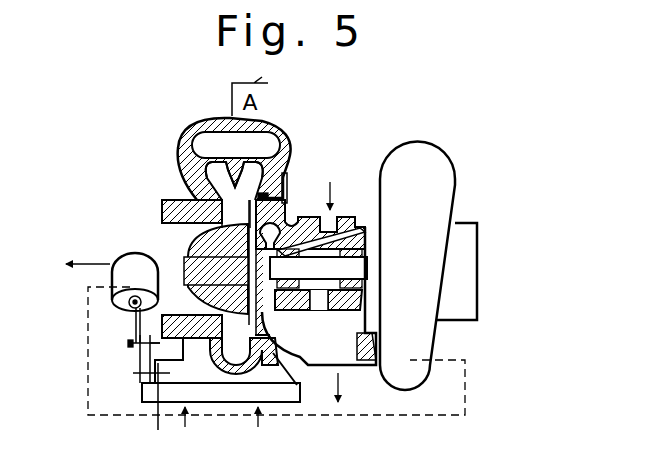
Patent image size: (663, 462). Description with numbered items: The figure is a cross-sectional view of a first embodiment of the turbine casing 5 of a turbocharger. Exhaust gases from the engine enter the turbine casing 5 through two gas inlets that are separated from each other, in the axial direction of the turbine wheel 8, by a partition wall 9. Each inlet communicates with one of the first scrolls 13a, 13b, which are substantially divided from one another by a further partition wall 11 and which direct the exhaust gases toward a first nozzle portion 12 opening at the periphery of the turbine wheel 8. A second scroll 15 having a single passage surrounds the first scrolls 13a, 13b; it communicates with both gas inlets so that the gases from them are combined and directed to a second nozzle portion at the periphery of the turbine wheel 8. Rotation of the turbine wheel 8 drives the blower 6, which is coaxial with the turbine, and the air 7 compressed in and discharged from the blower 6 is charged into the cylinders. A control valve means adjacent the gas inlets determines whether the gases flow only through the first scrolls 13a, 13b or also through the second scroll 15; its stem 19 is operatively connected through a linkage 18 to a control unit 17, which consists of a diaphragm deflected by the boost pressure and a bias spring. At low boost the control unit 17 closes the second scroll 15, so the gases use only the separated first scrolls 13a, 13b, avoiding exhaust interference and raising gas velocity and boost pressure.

The turbine casing 5 is at (176, 143).
The blower 6 is at (440, 177).
The air 7 is at (491, 272).
The turbine wheel 8 is at (203, 252).
The partition wall 9 is at (228, 372).
The partition wall 11 is at (233, 166).
The first nozzle portion 12 is at (270, 198).
The first scroll 13a is at (217, 174).
The first scroll 13b is at (252, 174).
The second scroll 15 is at (213, 142).
The control unit 17 is at (120, 302).
The linkage 18 is at (134, 325).
The stem 19 is at (216, 393).